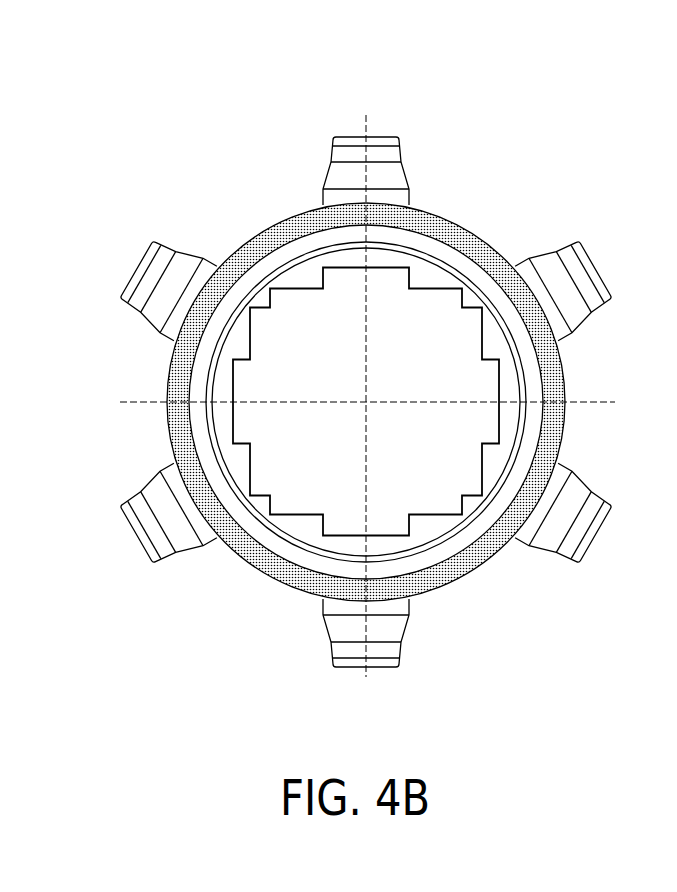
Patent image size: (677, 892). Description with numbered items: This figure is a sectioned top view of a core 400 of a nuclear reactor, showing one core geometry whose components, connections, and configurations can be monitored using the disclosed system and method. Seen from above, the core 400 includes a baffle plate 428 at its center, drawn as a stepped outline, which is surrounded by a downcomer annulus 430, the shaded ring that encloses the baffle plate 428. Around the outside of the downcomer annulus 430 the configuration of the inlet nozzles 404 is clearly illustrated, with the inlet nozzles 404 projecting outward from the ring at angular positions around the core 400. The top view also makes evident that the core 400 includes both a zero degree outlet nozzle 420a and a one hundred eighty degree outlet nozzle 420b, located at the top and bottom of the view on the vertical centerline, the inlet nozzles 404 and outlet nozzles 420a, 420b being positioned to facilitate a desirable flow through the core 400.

The core 400 is at (245, 120).
The inlet nozzle 404 is at (465, 268).
The zero degree outlet nozzle 420a is at (366, 144).
The 180 degree outlet nozzle 420b is at (366, 658).
The baffle plate 428 is at (253, 478).
The downcomer annulus 430 is at (257, 260).